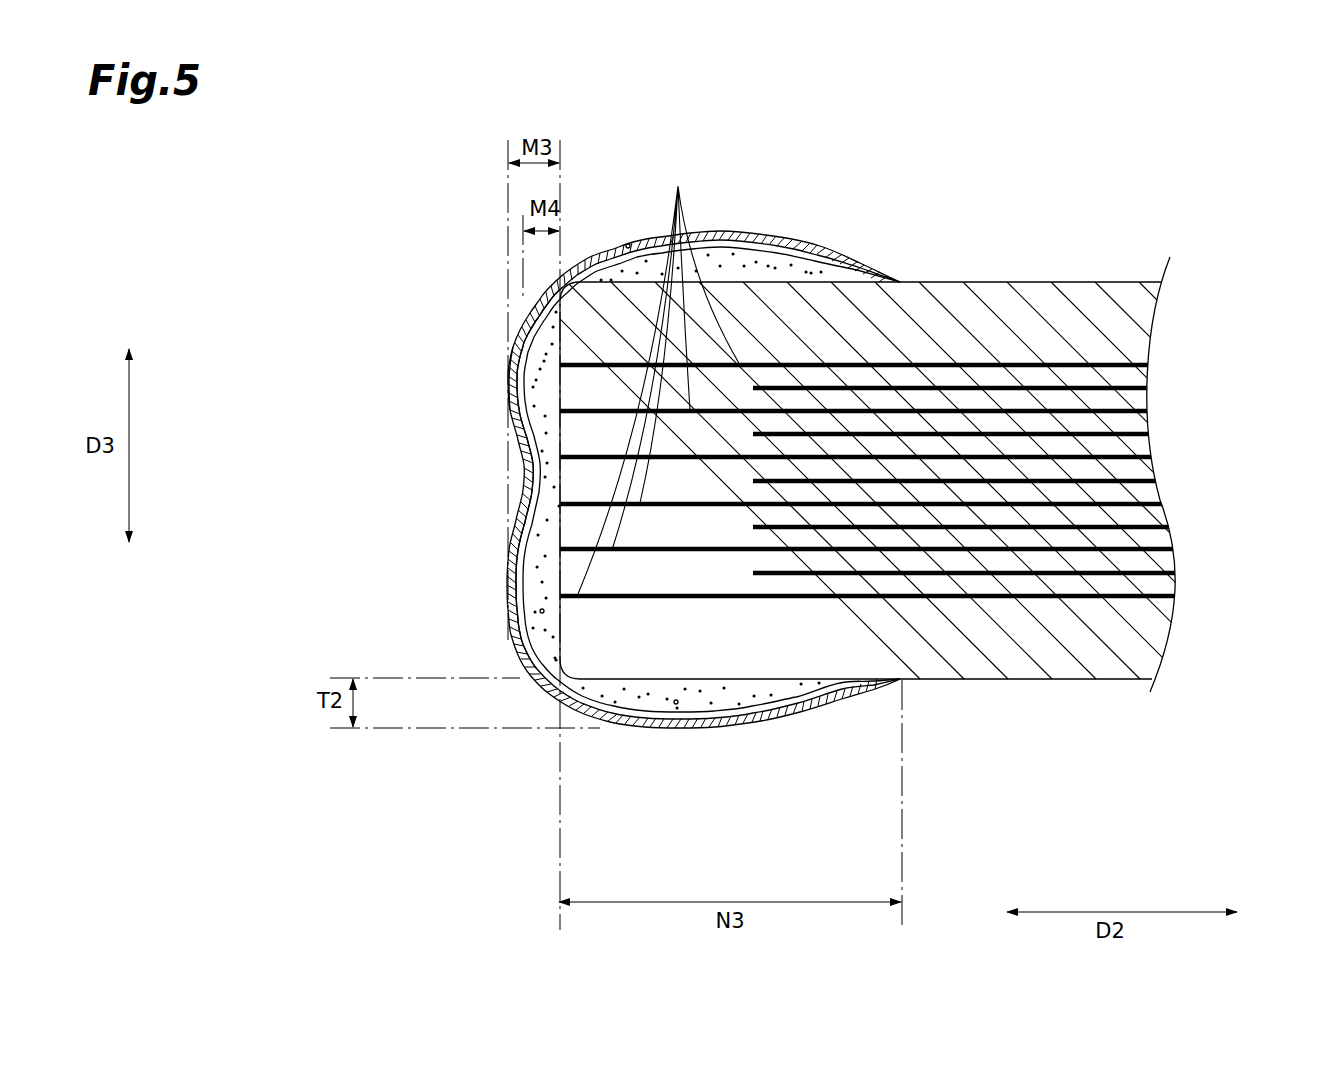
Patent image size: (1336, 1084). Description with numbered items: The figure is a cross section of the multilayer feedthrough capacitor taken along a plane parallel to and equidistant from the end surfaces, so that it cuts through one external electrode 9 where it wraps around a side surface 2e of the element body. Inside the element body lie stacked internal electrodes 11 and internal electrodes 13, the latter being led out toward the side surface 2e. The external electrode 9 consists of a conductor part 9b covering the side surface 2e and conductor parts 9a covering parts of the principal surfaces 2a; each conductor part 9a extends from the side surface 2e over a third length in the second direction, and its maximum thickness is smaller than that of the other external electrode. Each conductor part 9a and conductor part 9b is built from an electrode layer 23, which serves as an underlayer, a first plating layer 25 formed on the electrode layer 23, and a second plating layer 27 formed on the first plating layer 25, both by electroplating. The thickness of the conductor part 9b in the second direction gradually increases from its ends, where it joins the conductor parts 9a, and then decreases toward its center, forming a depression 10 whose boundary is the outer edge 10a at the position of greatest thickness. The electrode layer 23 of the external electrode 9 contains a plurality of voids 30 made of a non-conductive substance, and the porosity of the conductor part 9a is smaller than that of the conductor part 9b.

The principal surface 2a is at (1030, 282).
The side surface 2e is at (548, 340).
The external electrode 9 is at (634, 464).
The conductor part 9a is at (750, 237).
The conductor part 9b is at (524, 573).
The depression 10 is at (545, 502).
The outer edge 10a is at (507, 368).
The internal electrode 11 is at (954, 576).
The internal electrode 13 is at (678, 186).
The electrode layer 23 is at (640, 713).
The first plating layer 25 is at (698, 723).
The second plating layer 27 is at (750, 722).
The void 30 is at (626, 243).